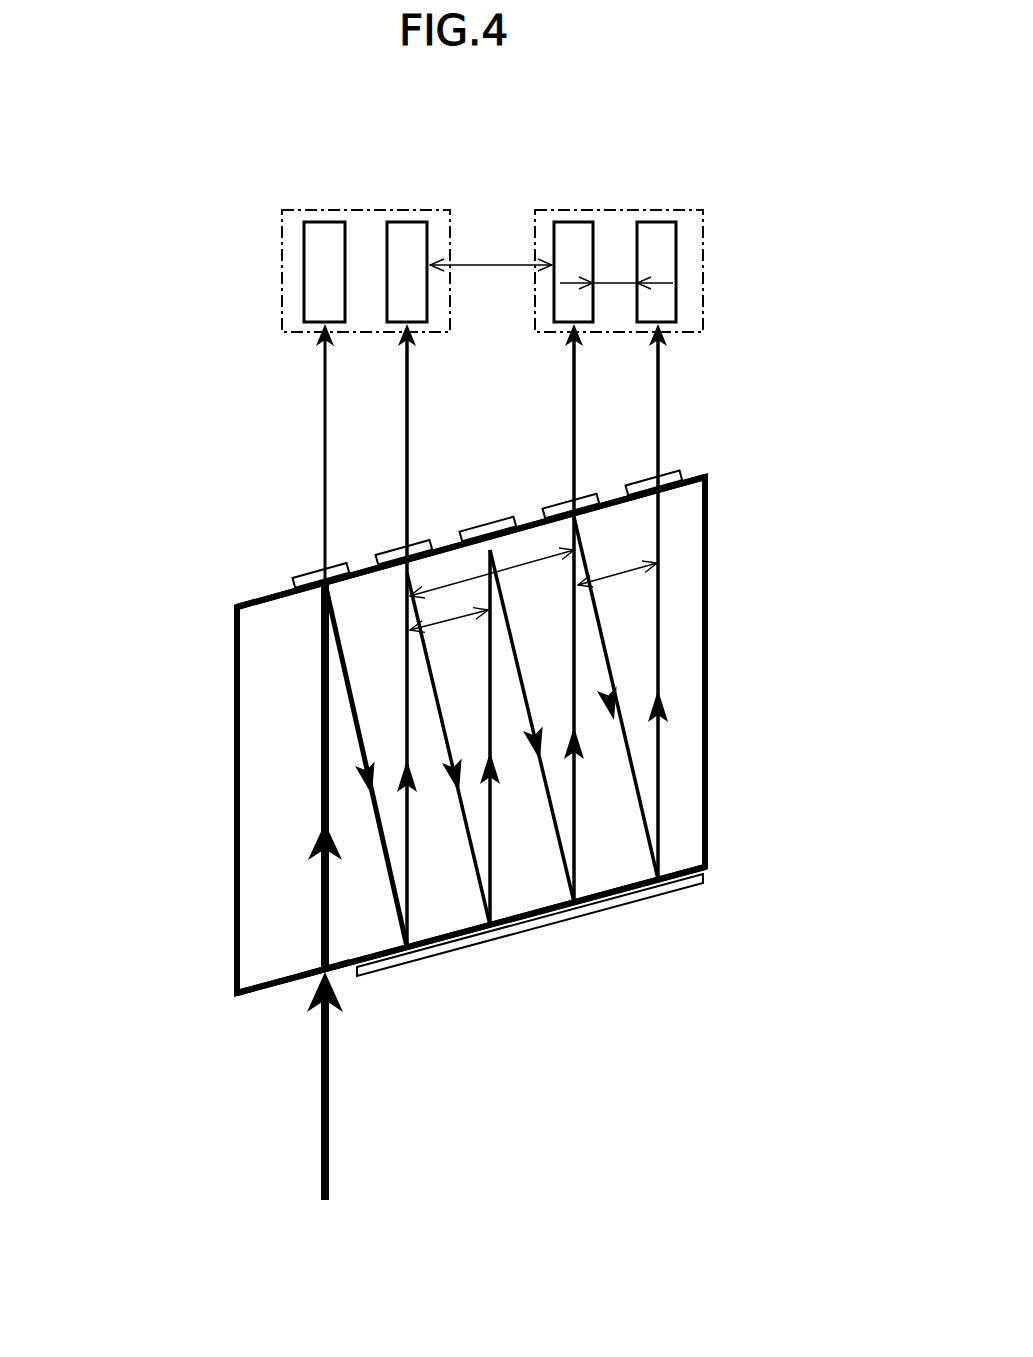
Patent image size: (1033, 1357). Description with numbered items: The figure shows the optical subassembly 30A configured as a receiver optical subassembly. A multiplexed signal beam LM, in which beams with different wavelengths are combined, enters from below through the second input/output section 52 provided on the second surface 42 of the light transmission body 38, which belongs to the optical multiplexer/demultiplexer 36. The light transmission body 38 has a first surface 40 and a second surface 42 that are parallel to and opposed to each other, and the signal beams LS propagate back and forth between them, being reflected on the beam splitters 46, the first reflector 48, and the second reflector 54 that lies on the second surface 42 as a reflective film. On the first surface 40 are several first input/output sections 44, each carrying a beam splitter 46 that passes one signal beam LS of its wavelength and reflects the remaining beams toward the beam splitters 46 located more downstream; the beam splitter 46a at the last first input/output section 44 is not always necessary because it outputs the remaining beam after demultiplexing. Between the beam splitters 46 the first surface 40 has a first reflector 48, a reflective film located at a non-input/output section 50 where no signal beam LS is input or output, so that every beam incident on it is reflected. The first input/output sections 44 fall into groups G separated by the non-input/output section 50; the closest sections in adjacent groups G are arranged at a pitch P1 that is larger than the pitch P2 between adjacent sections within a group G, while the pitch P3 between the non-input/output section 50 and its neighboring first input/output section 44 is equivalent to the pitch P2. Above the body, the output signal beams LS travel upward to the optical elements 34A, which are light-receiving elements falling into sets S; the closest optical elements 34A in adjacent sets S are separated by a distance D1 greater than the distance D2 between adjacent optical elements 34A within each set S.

The optical subassembly 30A is at (245, 406).
The optical element 34A is at (327, 233).
The optical multiplexer/demultiplexer 36 is at (193, 732).
The light transmission body 38 is at (237, 846).
The first surface 40 is at (237, 606).
The second surface 42 is at (247, 996).
The first input/output section 44 is at (736, 553).
The beam splitter 46 is at (297, 580).
The beam splitter 46a is at (684, 472).
The first reflector 48 is at (507, 528).
The non-input/output section 50 is at (488, 538).
The second input/output section 52 is at (332, 972).
The second reflector 54 is at (628, 895).
The set S is at (287, 208).
The signal beam LS is at (323, 363).
The multiplexed signal beam LM is at (329, 1107).
The group G is at (308, 490).
The distance D1 is at (491, 256).
The distance D2 is at (616, 272).
The pitch P1 is at (492, 573).
The pitch P2 is at (617, 586).
The pitch P3 is at (449, 634).